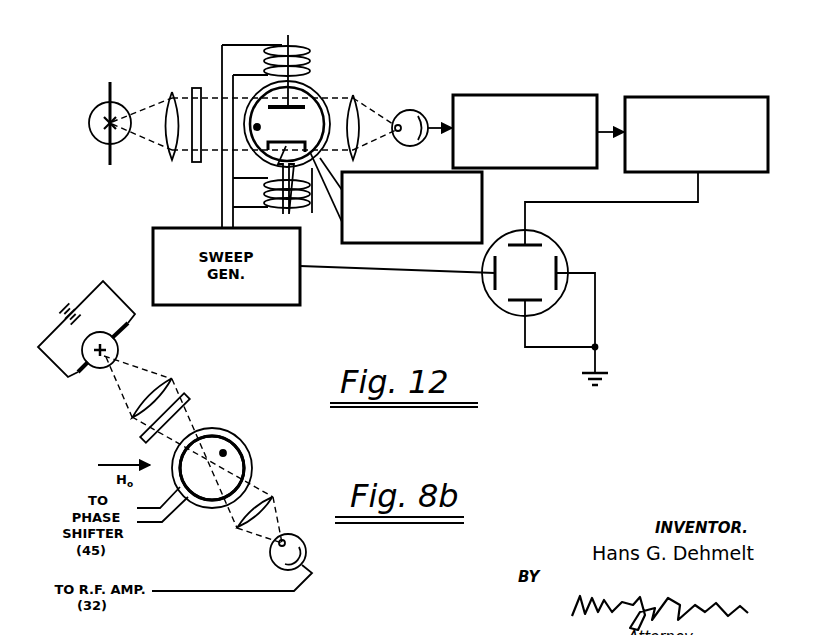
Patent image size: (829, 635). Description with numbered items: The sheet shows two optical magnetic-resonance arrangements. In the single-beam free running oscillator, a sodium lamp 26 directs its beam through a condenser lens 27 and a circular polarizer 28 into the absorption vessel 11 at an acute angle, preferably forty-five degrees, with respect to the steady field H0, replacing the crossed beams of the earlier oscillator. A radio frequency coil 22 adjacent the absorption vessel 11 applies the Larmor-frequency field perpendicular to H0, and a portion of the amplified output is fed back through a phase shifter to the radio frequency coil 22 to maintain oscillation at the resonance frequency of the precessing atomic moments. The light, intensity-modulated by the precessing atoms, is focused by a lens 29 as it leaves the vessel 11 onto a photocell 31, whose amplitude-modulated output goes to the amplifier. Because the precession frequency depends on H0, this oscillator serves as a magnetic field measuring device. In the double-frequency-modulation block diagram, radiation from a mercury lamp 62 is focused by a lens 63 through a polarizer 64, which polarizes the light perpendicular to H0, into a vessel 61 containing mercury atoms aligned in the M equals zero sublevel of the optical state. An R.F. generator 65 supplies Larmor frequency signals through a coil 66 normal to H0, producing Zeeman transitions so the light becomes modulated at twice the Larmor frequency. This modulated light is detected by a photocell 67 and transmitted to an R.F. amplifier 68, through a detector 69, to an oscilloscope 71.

In FIG. 8B, the absorption vessel 11 is at (239, 473).
In FIG. 8B, the radio frequency coil 22 is at (246, 447).
In FIG. 8B, the sodium lamp 26 is at (118, 349).
In FIG. 8B, the condenser lens 27 is at (172, 381).
In FIG. 8B, the circular polarizer 28 is at (188, 398).
In FIG. 8B, the lens 29 is at (275, 498).
In FIG. 8B, the photocell 31 is at (298, 538).
In FIG. 12, the vessel 61 is at (306, 82).
In FIG. 12, the mercury lamp 62 is at (121, 106).
In FIG. 12, the lens 63 is at (170, 92).
In FIG. 12, the polarizer 64 is at (197, 88).
In FIG. 12, the R.F. generator 65 is at (483, 197).
In FIG. 12, the coil 66 is at (317, 94).
In FIG. 12, the photocell 67 is at (409, 110).
In FIG. 12, the R.F. amplifier 68 is at (518, 93).
In FIG. 12, the detector 69 is at (688, 98).
In FIG. 12, the oscilloscope 71 is at (555, 248).